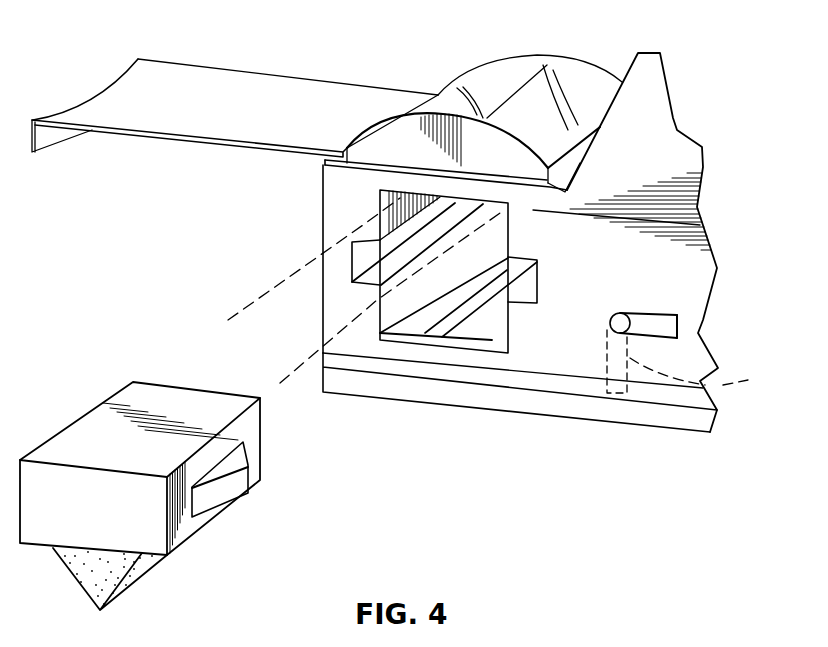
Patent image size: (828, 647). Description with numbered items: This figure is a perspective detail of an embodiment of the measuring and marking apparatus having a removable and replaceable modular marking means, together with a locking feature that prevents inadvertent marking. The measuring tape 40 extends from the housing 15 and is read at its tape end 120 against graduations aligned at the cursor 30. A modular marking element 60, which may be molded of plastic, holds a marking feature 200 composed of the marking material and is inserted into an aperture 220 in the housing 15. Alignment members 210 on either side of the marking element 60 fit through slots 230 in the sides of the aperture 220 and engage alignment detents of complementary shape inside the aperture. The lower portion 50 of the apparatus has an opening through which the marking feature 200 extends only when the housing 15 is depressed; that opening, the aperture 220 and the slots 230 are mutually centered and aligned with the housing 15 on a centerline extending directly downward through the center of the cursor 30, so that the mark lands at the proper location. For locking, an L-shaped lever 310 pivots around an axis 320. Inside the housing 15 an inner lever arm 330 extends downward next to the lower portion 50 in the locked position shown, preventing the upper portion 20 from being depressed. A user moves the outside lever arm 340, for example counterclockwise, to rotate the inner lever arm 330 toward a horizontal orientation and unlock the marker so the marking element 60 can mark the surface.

The housing 15 is at (652, 162).
The upper portion 20 is at (330, 190).
The cursor 30 is at (546, 64).
The measuring tape 40 is at (202, 77).
The lower portion 50 is at (525, 402).
The marking element 60 is at (88, 427).
The tape end 120 is at (76, 107).
The marking feature 200 is at (143, 570).
The alignment members 210 is at (237, 488).
The aperture 220 is at (383, 325).
The slots 230 is at (363, 262).
The L-shaped lever 310 is at (624, 313).
The axis 320 is at (612, 323).
The inner lever arm 330 is at (716, 376).
The outside lever arm 340 is at (678, 330).